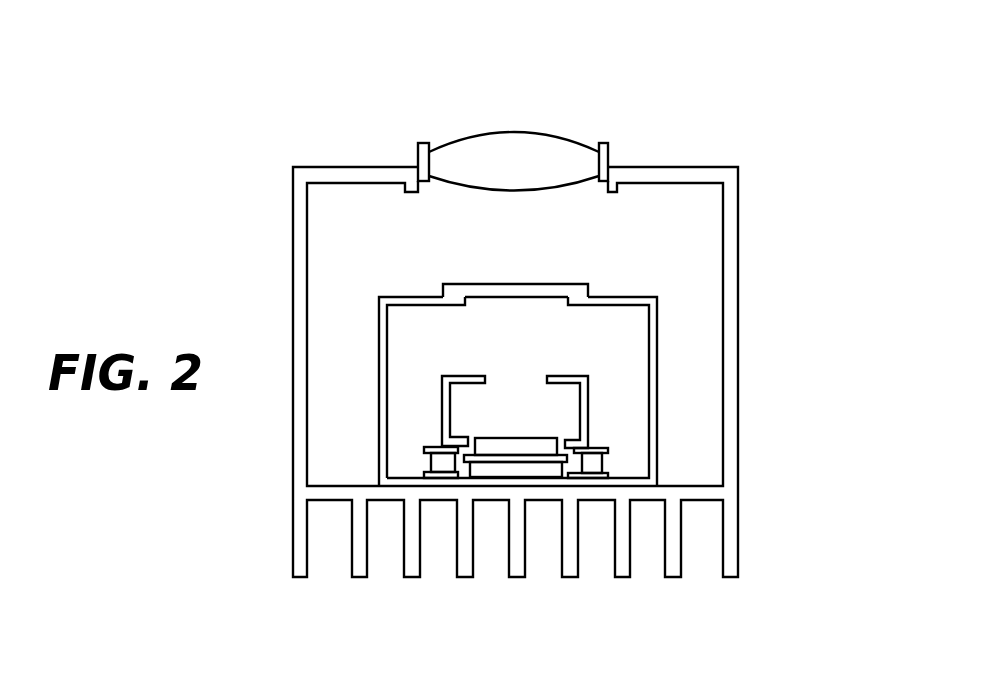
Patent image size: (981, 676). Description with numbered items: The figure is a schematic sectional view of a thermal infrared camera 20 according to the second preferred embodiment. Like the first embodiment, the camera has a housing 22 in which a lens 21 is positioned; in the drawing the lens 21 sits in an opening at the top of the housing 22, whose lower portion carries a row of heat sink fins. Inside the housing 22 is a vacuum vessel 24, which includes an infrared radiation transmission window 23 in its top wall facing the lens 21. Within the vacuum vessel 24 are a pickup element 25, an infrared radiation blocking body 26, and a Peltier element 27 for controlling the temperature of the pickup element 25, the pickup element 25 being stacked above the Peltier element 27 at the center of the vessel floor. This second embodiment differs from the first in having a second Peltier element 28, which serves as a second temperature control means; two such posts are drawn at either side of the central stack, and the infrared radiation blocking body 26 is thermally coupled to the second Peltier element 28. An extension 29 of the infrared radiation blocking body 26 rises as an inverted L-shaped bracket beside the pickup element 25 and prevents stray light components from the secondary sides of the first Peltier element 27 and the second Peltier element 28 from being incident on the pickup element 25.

The thermal infrared camera 20 is at (745, 87).
The lens 21 is at (565, 152).
The housing 22 is at (728, 203).
The infrared radiation transmission window 23 is at (580, 288).
The vacuum vessel 24 is at (658, 337).
The pickup element 25 is at (550, 436).
The infrared radiation blocking body 26 is at (588, 432).
The Peltier element 27 is at (600, 455).
The second Peltier element 28 is at (442, 468).
The extension 29 is at (463, 437).